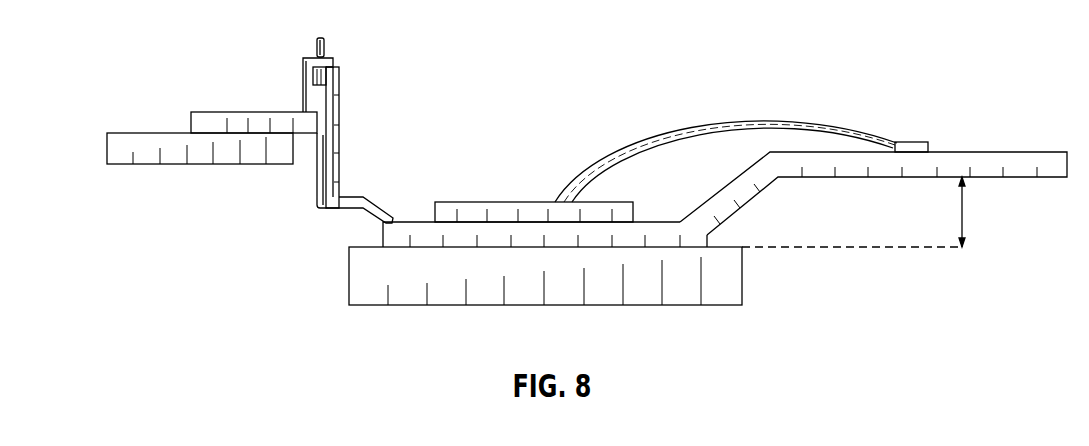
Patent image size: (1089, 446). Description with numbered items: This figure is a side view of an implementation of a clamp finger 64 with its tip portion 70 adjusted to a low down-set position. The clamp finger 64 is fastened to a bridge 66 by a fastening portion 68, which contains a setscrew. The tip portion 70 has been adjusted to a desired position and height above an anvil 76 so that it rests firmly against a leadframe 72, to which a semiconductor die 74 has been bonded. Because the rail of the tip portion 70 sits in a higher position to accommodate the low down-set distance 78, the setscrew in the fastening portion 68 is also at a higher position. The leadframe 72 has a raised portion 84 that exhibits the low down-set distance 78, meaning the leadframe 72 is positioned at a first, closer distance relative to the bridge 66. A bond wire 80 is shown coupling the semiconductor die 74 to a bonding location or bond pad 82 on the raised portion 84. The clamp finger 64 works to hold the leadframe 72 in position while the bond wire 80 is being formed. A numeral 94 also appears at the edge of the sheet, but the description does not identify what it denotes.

The clamp finger 64 is at (275, 110).
The bridge 66 is at (252, 150).
The fastening portion 68 is at (210, 125).
The tip portion 70 is at (333, 153).
The leadframe 72 is at (408, 230).
The semiconductor die 74 is at (480, 212).
The anvil 76 is at (607, 292).
The low down-set distance 78 is at (962, 212).
The bond wire 80 is at (827, 112).
The bond pad 82 is at (913, 140).
The raised portion 84 is at (968, 150).
The component 94 is at (328, 445).